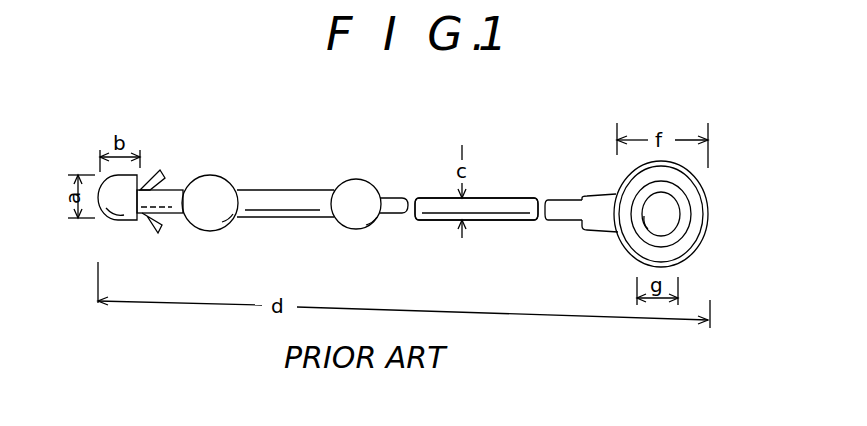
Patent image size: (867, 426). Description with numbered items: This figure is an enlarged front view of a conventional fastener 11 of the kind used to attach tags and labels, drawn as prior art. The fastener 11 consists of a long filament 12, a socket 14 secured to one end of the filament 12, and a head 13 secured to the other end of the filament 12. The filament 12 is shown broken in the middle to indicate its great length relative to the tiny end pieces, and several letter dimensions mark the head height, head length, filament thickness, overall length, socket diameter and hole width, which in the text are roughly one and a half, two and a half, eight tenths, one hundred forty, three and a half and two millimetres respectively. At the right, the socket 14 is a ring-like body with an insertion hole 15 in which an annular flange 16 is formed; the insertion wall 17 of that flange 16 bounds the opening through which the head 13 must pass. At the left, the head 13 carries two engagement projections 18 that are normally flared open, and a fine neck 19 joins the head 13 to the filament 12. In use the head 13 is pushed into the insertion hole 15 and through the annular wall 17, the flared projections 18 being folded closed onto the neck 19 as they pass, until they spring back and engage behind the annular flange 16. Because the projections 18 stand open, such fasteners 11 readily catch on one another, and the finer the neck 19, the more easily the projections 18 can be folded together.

The fastener 11 is at (445, 195).
The filament 12 is at (472, 198).
The head 13 is at (130, 222).
The socket 14 is at (705, 175).
The insertion hole 15 is at (667, 227).
The annular flange 16 is at (687, 206).
The insertion wall 17 is at (642, 230).
The engagement projections 18 is at (157, 172).
The neck 19 is at (172, 212).